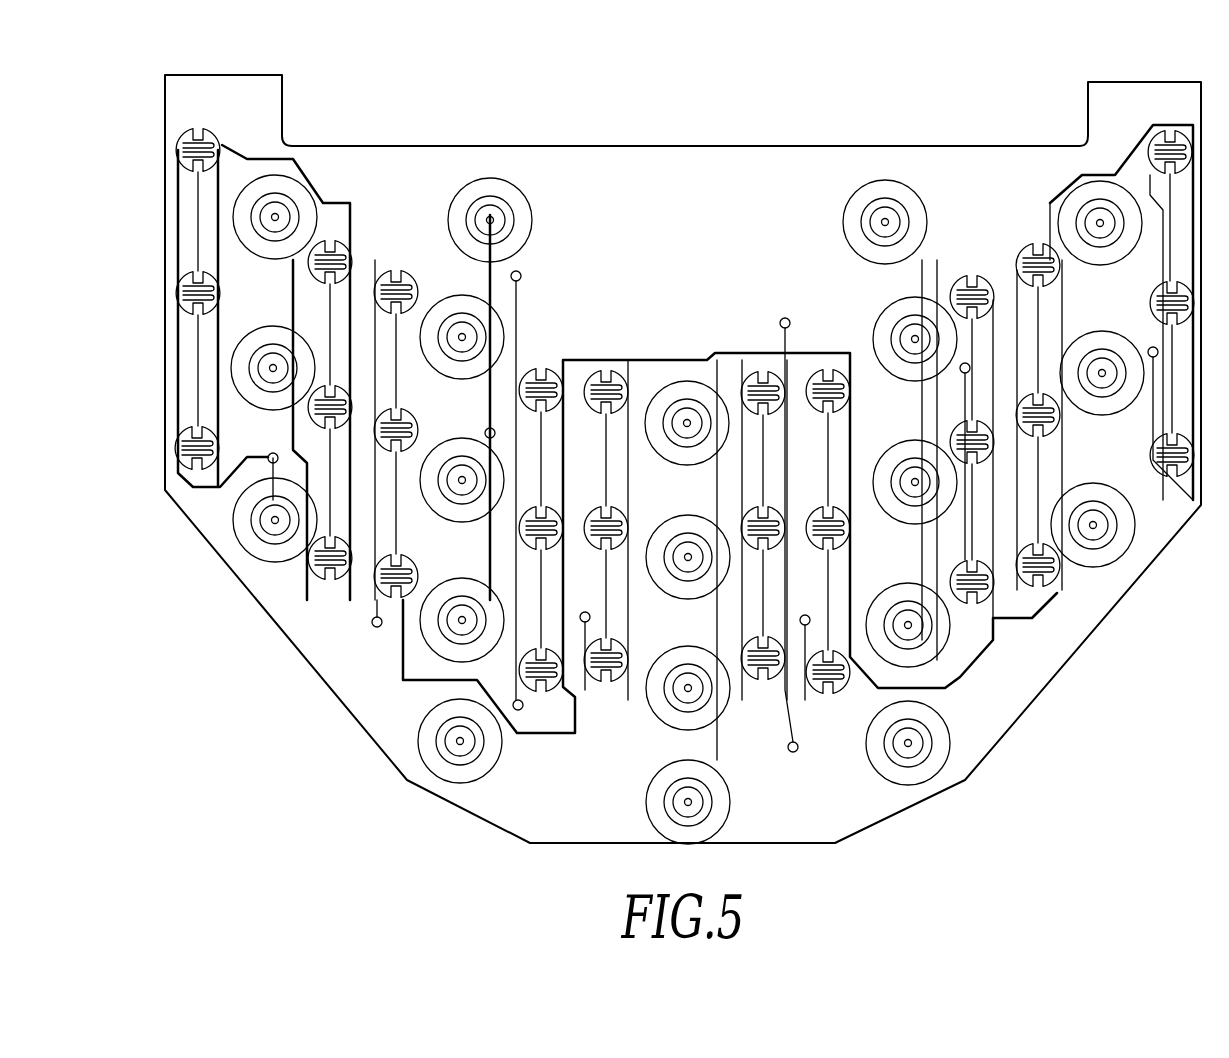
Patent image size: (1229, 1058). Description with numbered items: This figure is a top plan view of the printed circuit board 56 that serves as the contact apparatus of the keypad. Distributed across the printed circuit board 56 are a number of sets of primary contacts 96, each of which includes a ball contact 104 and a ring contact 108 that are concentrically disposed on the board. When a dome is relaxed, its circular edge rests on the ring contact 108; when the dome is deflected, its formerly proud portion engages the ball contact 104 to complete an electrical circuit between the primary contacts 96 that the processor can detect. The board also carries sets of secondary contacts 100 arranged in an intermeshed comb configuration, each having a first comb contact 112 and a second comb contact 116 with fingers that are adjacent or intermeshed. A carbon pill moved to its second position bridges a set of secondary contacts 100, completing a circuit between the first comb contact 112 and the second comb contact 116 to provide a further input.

The printed circuit board 56 is at (730, 142).
The set of primary contacts 96 is at (320, 182).
The set of secondary contacts 100 is at (412, 262).
The ball contact 104 is at (272, 230).
The ring contact 108 is at (234, 220).
The first comb contact 112 is at (400, 265).
The second comb contact 116 is at (417, 288).